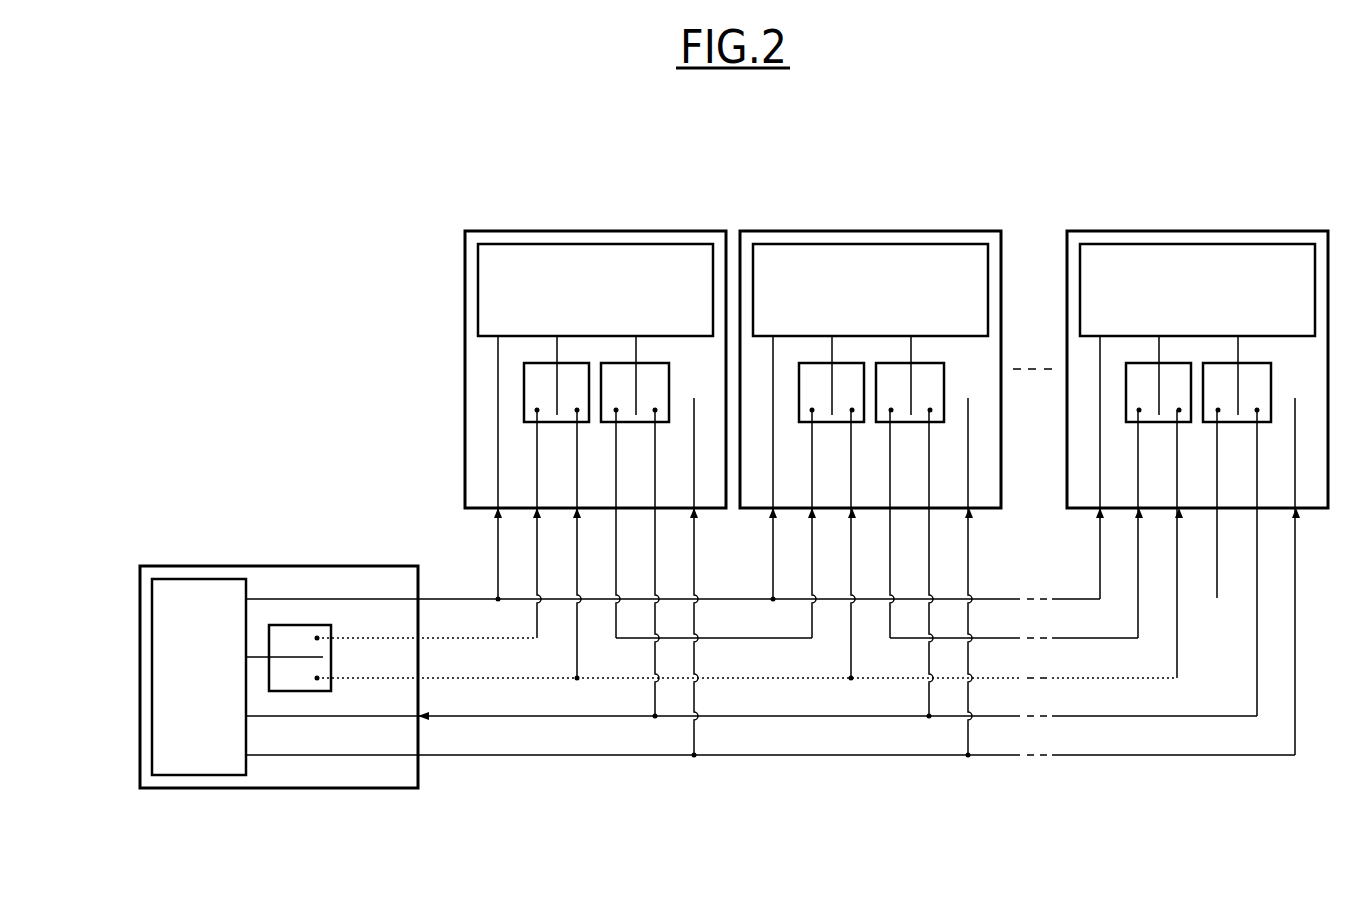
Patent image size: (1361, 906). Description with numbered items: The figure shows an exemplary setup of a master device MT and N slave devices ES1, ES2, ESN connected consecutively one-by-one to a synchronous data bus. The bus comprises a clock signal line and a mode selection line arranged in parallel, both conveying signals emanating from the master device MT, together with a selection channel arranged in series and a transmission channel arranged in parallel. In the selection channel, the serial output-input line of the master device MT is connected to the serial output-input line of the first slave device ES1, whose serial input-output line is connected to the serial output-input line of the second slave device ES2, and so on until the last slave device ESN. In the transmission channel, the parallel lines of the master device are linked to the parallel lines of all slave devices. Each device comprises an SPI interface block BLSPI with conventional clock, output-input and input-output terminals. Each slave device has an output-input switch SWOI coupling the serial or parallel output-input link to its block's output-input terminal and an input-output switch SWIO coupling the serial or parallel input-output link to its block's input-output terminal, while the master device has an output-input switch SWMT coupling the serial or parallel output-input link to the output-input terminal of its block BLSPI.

The master device MT is at (276, 566).
The output-input switch SWMT is at (301, 625).
The SPI interface block BLSPI is at (196, 579).
The first slave device ES1 is at (640, 231).
The second slave device ES2 is at (915, 231).
The last slave device ESN is at (1242, 231).
The output-input switch SWOI is at (539, 362).
The input-output switch SWIO is at (652, 362).